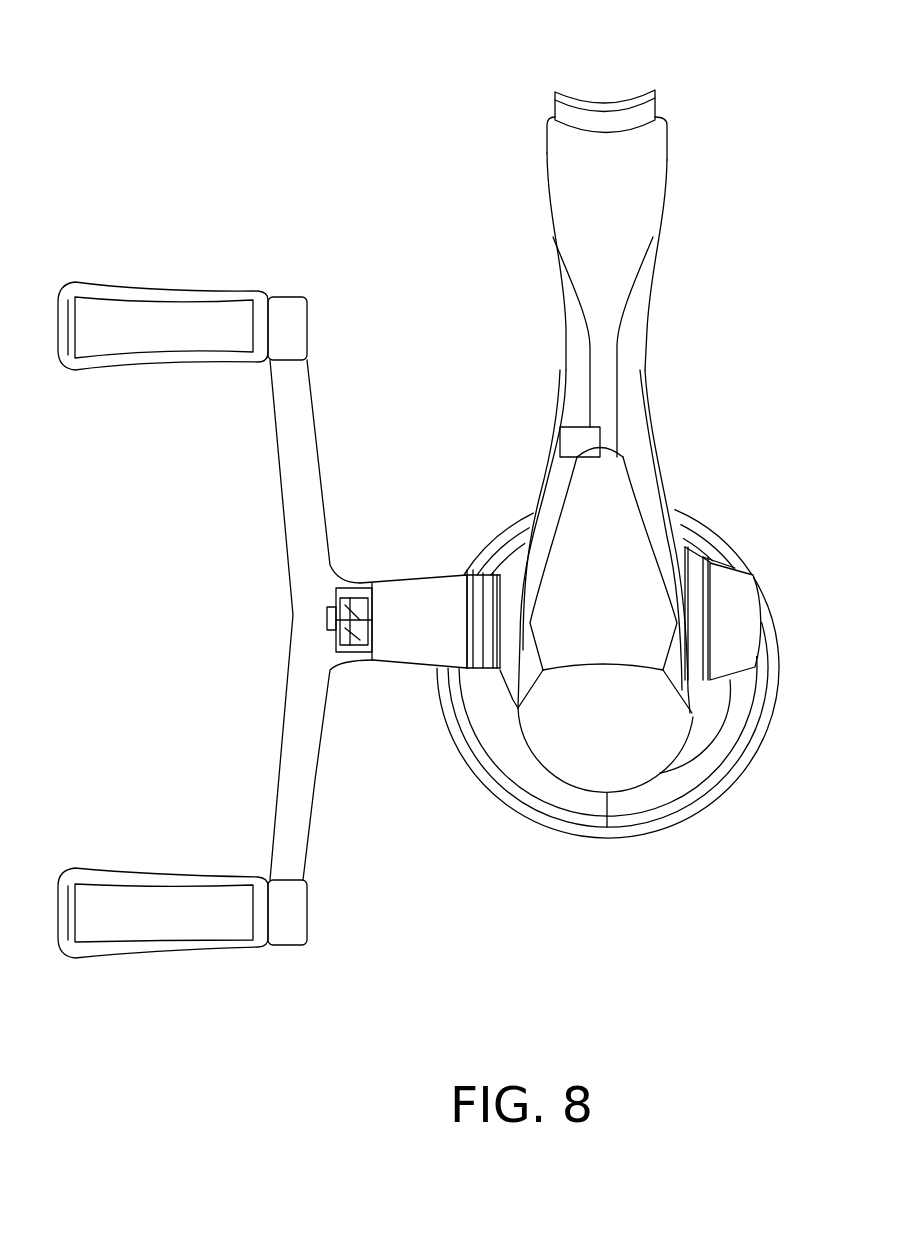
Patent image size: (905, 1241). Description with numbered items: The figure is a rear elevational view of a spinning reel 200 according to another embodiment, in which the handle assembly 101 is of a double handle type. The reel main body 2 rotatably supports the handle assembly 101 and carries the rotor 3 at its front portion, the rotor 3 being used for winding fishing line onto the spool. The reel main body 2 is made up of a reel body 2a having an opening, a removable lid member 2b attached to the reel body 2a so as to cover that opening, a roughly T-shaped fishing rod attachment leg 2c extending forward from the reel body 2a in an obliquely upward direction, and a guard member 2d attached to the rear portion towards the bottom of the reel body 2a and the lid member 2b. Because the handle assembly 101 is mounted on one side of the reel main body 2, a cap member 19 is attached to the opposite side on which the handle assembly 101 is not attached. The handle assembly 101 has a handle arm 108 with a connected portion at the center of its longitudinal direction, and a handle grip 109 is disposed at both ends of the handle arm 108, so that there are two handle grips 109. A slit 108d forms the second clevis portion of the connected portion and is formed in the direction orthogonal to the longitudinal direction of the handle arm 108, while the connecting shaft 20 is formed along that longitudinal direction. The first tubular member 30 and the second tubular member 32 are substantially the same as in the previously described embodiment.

The spinning reel 200 is at (703, 126).
The handle assembly 101 is at (398, 498).
The handle grip 109 is at (180, 290).
The handle arm 108 is at (289, 474).
The slit 108d is at (333, 627).
The second tubular member 32 is at (426, 588).
The connecting shaft 20 is at (330, 578).
The first tubular member 30 is at (350, 657).
The rotor 3 is at (767, 756).
The cap member 19 is at (740, 602).
The reel main body 2 is at (733, 372).
The fishing rod attachment leg 2c is at (610, 284).
The lid member 2b is at (552, 477).
The reel body 2a is at (653, 497).
The guard member 2d is at (560, 718).